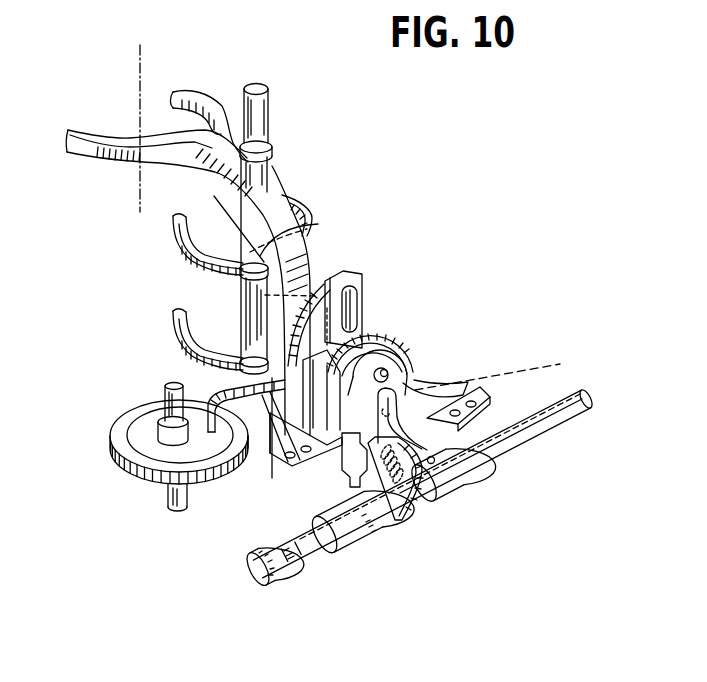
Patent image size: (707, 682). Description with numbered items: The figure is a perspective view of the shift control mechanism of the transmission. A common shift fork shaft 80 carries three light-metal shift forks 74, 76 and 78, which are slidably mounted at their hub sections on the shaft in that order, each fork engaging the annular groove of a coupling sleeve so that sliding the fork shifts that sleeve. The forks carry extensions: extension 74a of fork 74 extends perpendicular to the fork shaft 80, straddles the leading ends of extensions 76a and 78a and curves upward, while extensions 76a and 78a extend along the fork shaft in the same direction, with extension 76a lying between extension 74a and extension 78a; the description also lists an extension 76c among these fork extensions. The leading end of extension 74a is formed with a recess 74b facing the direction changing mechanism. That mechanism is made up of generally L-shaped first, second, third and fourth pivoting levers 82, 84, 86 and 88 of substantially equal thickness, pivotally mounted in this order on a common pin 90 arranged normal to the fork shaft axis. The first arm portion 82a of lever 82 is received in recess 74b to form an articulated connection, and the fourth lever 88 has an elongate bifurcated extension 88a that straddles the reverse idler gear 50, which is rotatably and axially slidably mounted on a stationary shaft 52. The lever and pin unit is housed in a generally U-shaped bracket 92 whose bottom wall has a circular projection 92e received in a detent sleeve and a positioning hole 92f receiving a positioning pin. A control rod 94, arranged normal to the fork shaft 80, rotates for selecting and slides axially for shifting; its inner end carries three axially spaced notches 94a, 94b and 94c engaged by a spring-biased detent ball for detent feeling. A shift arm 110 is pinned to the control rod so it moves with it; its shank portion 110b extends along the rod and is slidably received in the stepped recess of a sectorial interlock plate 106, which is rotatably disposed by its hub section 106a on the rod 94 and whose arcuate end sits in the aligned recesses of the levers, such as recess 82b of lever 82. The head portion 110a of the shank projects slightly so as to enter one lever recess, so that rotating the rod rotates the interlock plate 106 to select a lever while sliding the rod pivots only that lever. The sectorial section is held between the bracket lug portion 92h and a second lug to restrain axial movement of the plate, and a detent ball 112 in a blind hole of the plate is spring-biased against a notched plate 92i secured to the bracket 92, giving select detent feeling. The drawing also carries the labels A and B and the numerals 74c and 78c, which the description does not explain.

The reverse idler gear 50 is at (130, 450).
The stationary shaft 52 is at (175, 492).
The shift fork 74 is at (243, 360).
The extension 74a is at (327, 453).
The recess 74b is at (230, 389).
The fork post sleeve 74c is at (250, 343).
The shift fork 76 is at (180, 257).
The extension 76a is at (294, 448).
The extension 76c is at (258, 260).
The shift fork 78 is at (97, 152).
The extension 78a is at (282, 448).
The upper fork collar 78c is at (273, 141).
The common shift fork shaft 80 is at (262, 120).
The first pivoting lever 82 is at (385, 353).
The first arm portion 82a is at (435, 387).
The recess 82b is at (509, 370).
The second pivoting lever 84 is at (368, 345).
The third pivoting lever 86 is at (356, 338).
The fourth pivoting lever 88 is at (358, 277).
The elongate extension 88a is at (272, 456).
The common pin 90 is at (395, 374).
The bracket 92 is at (488, 399).
The circular projection 92e is at (270, 468).
The positioning hole 92f is at (487, 403).
The lug portion 92h is at (410, 503).
The notched plate 92i is at (437, 462).
The control rod 94 is at (513, 432).
The notch 94a is at (300, 560).
The notch 94b is at (305, 557).
The notch 94c is at (275, 568).
The interlock plate 106 is at (405, 478).
The hub section 106a is at (363, 541).
The shift arm 110 is at (445, 487).
The head portion 110a is at (345, 498).
The shank portion 110b is at (352, 525).
The detent ball 112 is at (452, 492).
The axis A is at (232, 308).
The axis B is at (137, 114).